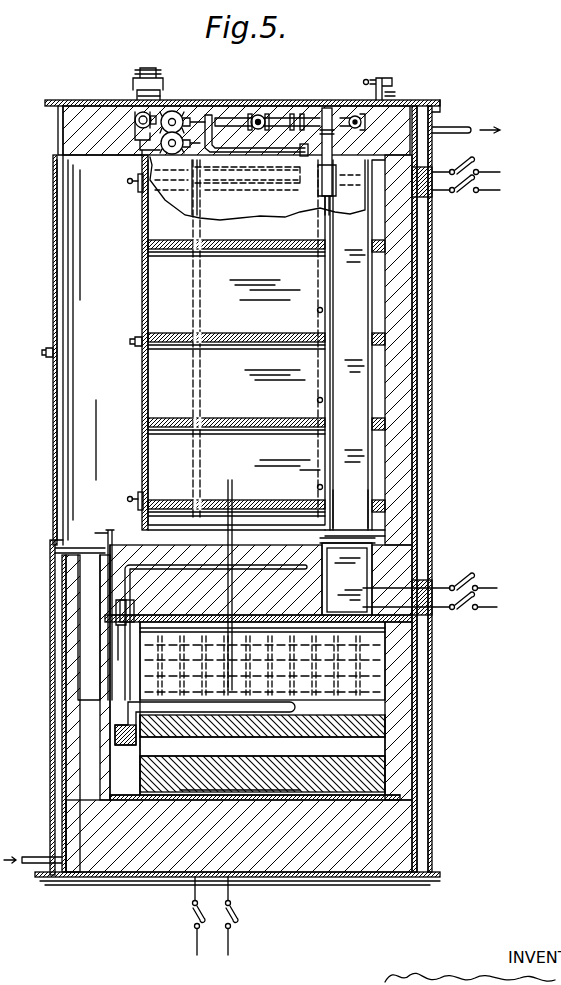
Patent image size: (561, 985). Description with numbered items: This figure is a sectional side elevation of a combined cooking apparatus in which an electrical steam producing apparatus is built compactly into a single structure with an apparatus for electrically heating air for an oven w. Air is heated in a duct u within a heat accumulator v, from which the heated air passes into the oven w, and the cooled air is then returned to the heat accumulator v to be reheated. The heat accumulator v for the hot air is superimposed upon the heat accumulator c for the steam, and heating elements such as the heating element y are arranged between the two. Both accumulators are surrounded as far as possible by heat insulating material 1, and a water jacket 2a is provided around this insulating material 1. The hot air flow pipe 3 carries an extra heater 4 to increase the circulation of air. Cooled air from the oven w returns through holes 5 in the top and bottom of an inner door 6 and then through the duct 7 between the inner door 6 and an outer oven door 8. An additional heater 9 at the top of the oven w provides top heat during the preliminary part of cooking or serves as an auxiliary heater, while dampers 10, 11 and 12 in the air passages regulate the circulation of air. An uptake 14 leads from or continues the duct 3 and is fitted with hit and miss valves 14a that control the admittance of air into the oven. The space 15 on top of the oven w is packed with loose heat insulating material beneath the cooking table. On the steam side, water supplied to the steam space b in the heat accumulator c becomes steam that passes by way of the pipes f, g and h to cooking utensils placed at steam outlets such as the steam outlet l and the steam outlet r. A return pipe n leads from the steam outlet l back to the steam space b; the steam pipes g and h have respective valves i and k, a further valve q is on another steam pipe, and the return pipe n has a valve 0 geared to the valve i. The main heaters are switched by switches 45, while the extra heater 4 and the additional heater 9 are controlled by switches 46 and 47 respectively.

The heat insulating material 1 is at (395, 835).
The water jacket 2a is at (55, 600).
The hot air flow pipe 3 is at (330, 547).
The extra heater 4 is at (347, 579).
The holes 5 is at (135, 190).
The inner door 6 is at (141, 275).
The duct 7 is at (78, 350).
The outer oven door 8 is at (52, 410).
The additional heater 9 is at (240, 172).
The damper 10 is at (340, 530).
The damper 11 is at (100, 548).
The damper 12 is at (106, 640).
The flue or uptake 14 is at (355, 348).
The hit and miss valves 14a is at (322, 300).
The space 15 is at (230, 115).
The switches 45 is at (242, 903).
The switch 46 is at (466, 580).
The switch 47 is at (465, 158).
The steam space b is at (355, 742).
The heat accumulator c is at (340, 777).
The steam pipe f is at (188, 575).
The steam pipe g is at (135, 115).
The steam pipe h is at (308, 112).
The valve i is at (190, 105).
The valve k is at (270, 112).
The steam outlet l is at (148, 66).
The return pipe n is at (210, 205).
The valve 0 is at (158, 153).
The valve q is at (337, 112).
The steam outlet r is at (366, 80).
The duct u is at (290, 612).
The heat accumulator v is at (234, 575).
The oven w is at (236, 345).
The heating element y is at (160, 703).